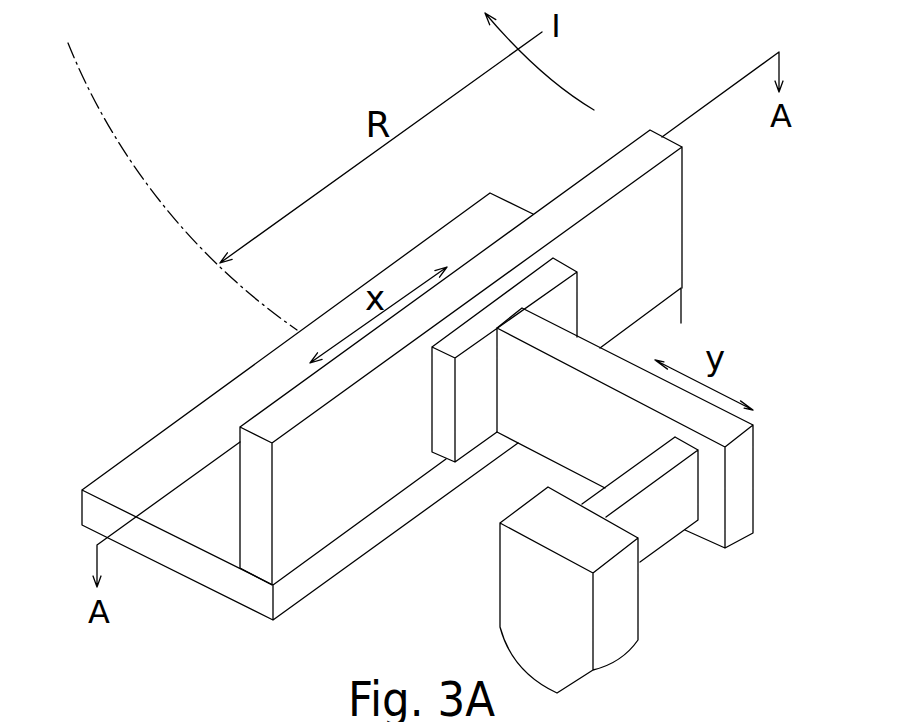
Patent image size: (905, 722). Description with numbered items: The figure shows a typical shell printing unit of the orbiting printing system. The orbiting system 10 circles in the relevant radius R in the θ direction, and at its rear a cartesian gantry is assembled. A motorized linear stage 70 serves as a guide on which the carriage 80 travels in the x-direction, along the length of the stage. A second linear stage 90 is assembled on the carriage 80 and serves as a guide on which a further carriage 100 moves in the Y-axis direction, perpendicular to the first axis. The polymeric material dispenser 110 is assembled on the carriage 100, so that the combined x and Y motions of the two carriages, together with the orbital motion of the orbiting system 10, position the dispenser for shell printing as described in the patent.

The orbiting system 10 is at (504, 211).
The motorized linear stage 70 is at (683, 208).
The carriage 80 is at (442, 420).
The linear stage 90 is at (740, 528).
The carriage 100 is at (668, 535).
The polymeric material dispenser 110 is at (513, 583).